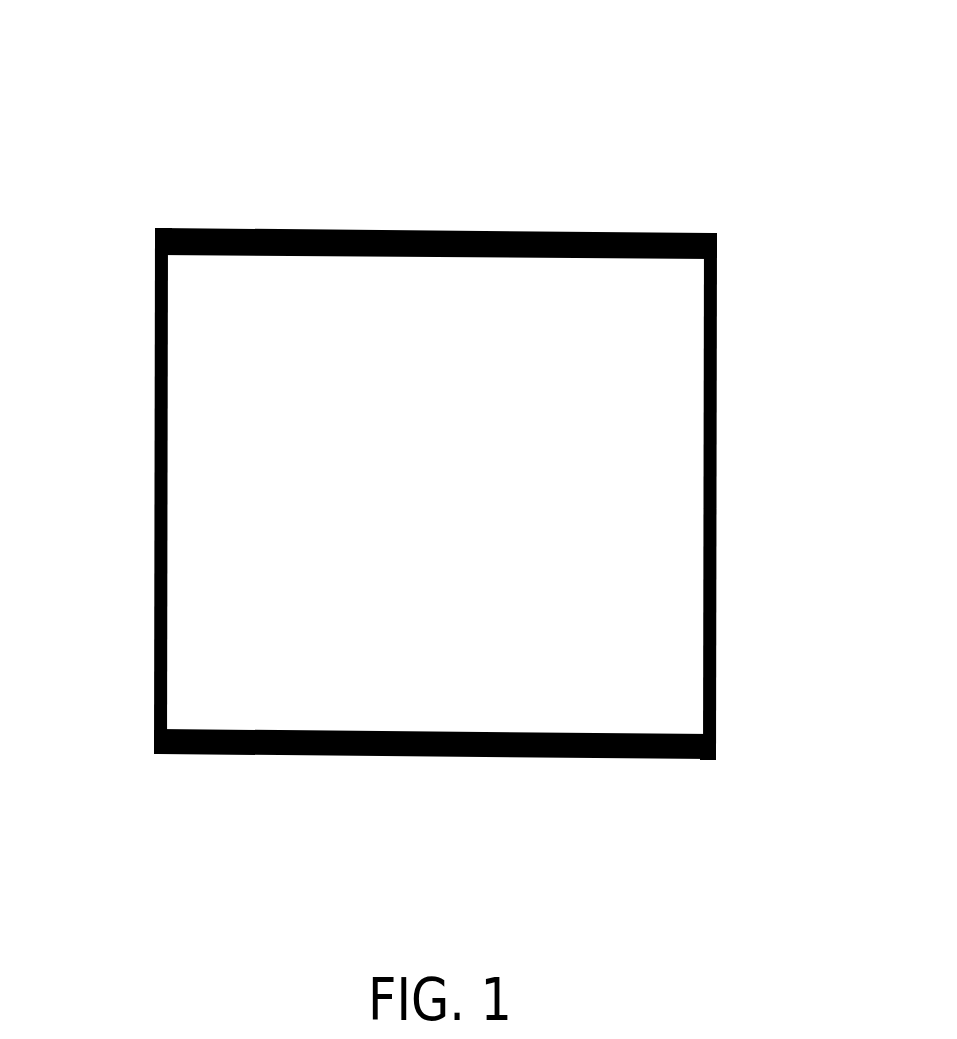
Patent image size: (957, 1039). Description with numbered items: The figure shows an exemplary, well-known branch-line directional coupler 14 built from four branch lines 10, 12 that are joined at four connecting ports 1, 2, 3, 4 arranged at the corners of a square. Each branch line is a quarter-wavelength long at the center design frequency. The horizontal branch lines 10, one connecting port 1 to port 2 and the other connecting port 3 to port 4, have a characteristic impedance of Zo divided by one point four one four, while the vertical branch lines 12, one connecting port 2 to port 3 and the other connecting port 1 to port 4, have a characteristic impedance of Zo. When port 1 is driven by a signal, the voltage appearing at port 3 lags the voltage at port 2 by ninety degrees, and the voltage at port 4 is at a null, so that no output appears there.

The connecting port 1 is at (162, 230).
The connecting port 2 is at (720, 246).
The connecting port 3 is at (715, 763).
The connecting port 4 is at (166, 759).
The branch lines 10 is at (435, 502).
The branch lines 12 is at (417, 496).
The branch-line directional coupler 14 is at (630, 130).